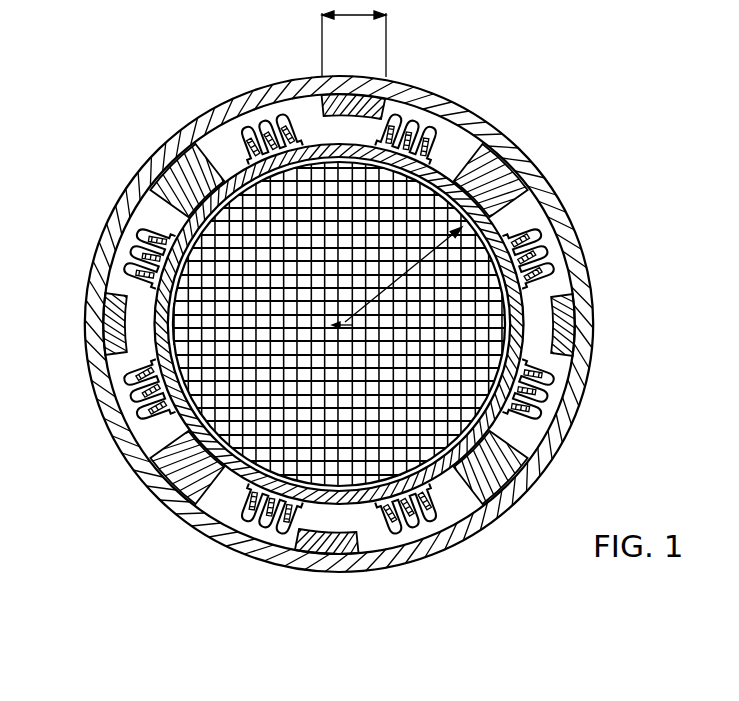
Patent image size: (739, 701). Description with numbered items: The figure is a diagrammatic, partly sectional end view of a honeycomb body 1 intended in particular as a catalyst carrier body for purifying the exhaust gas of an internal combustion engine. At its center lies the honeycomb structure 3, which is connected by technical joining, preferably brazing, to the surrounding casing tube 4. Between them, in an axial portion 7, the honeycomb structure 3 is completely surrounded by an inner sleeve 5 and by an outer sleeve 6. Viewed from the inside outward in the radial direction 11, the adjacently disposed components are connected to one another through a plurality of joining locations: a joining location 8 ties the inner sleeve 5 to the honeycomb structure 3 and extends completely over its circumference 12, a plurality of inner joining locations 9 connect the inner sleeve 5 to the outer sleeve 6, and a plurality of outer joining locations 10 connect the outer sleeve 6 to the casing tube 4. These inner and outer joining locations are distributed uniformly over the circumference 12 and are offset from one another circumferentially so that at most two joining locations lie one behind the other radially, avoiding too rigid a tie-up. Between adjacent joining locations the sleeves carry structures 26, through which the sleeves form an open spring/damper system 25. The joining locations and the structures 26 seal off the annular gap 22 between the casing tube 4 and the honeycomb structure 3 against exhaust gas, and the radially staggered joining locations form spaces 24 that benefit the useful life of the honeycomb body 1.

The honeycomb body 1 is at (128, 489).
The honeycomb structure 3 is at (488, 497).
The casing tube 4 is at (527, 470).
The inner sleeve 5 is at (220, 543).
The outer sleeve 6 is at (197, 527).
The axial portion 7 is at (358, 15).
The joining location 8 is at (330, 152).
The inner joining location 9 is at (197, 192).
The outer joining location 10 is at (88, 322).
The radial direction 11 is at (500, 170).
The circumference 12 is at (502, 362).
The annular gap 22 is at (505, 168).
The spaces 24 is at (98, 412).
The open spring/damper system 25 is at (527, 213).
The structures 26 is at (420, 118).